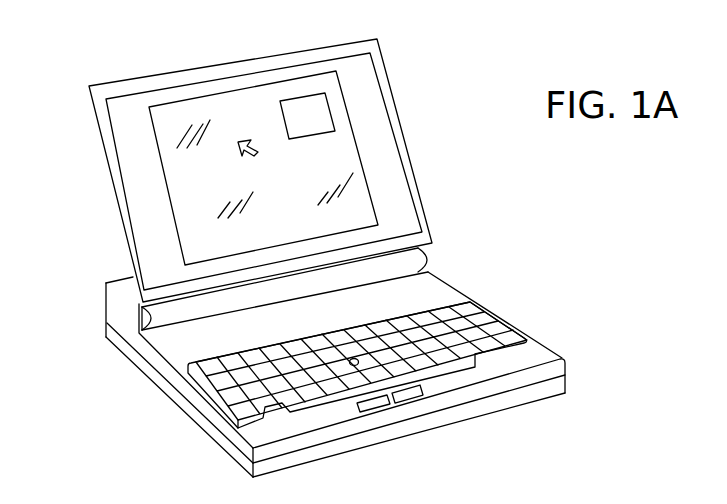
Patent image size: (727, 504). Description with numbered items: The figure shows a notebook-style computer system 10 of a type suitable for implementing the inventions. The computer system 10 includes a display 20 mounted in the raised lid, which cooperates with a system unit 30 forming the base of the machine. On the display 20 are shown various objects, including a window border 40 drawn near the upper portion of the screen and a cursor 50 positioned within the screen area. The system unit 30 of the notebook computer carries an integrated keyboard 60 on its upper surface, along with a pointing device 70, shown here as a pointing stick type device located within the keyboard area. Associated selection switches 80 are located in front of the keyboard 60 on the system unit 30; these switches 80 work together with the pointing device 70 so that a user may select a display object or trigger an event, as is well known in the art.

The computer system 10 is at (492, 200).
The display 20 is at (178, 173).
The system unit 30 is at (155, 378).
The window border 40 is at (323, 117).
The cursor 50 is at (238, 142).
The integrated keyboard 60 is at (510, 333).
The pointing device 70 is at (464, 306).
The selection switches 80 is at (382, 404).